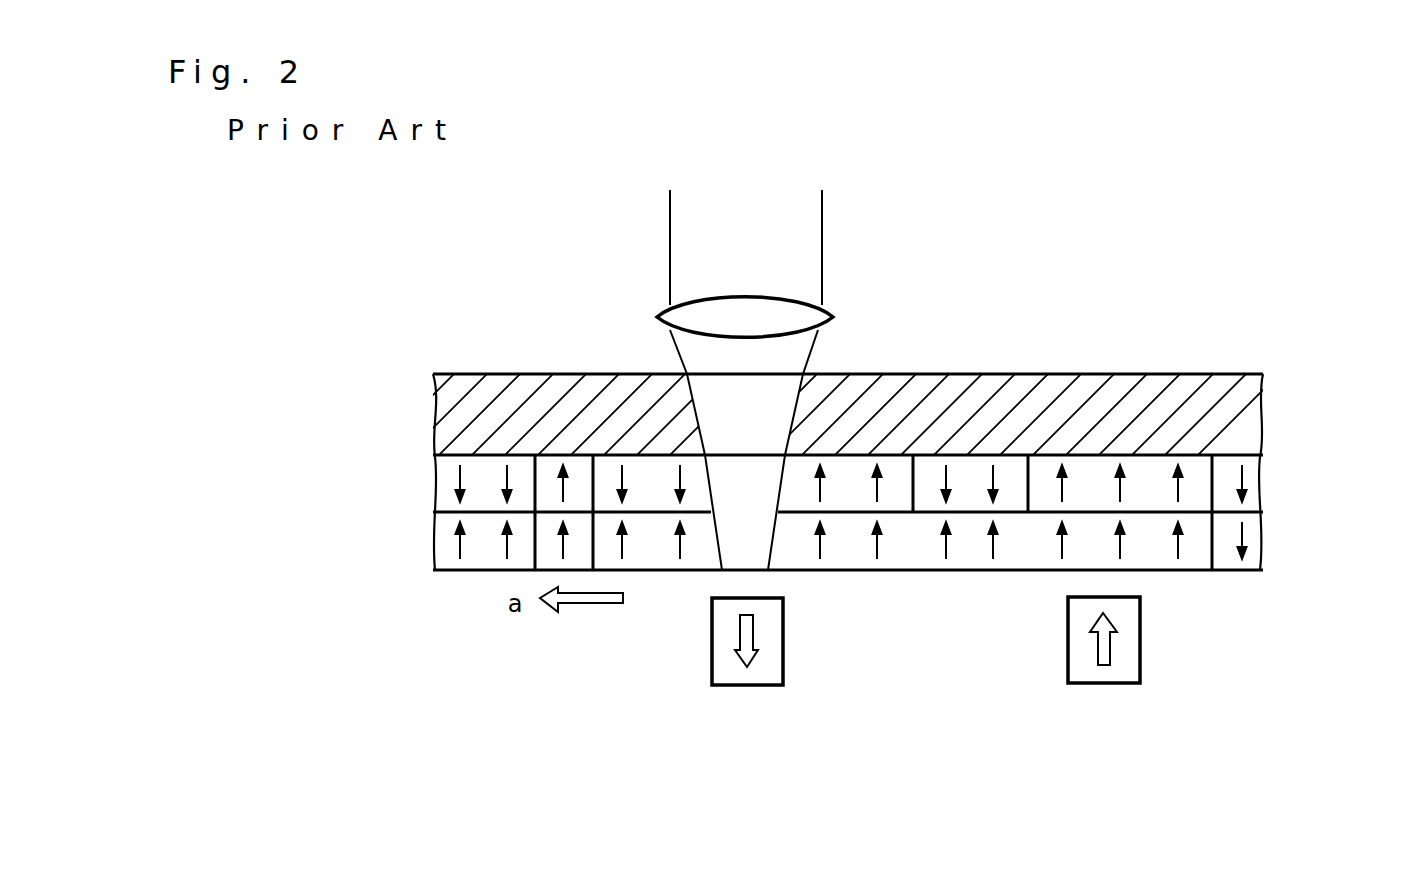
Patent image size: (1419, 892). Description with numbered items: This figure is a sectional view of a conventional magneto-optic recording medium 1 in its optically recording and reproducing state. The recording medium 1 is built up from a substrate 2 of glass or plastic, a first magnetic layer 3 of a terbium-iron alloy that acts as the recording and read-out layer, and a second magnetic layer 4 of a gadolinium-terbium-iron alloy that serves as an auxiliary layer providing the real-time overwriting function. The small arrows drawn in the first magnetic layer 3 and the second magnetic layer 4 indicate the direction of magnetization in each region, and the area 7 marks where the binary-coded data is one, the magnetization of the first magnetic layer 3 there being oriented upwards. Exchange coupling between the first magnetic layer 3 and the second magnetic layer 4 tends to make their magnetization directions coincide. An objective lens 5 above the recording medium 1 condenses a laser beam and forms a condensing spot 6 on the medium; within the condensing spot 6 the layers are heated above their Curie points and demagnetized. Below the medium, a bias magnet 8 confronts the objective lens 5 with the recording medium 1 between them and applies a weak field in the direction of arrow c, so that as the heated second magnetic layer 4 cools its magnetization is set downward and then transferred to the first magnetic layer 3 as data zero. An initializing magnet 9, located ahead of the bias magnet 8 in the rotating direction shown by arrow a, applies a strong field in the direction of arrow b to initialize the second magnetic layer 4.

The magneto-optic recording medium 1 is at (1223, 373).
The substrate 2 is at (1252, 400).
The first magnetic layer 3 is at (1253, 485).
The second magnetic layer 4 is at (1252, 545).
The objective lens 5 is at (668, 313).
The condensing spot 6 is at (753, 455).
The area where binary-coded data is "1" 7 is at (565, 495).
The bias magnet 8 is at (747, 685).
The initializing magnet 9 is at (1102, 683).